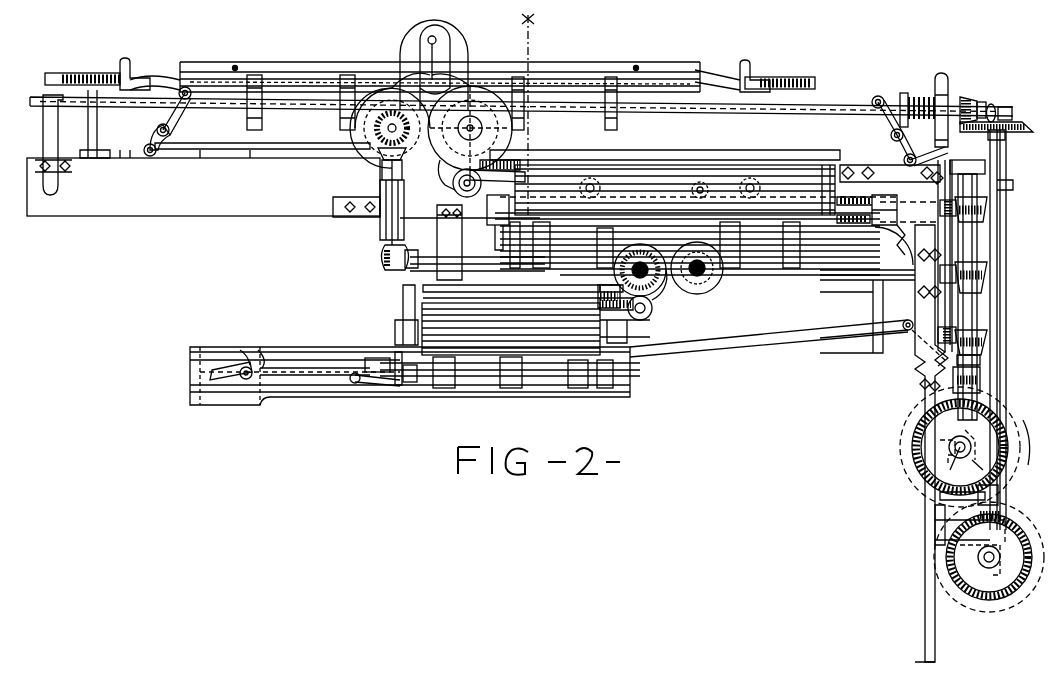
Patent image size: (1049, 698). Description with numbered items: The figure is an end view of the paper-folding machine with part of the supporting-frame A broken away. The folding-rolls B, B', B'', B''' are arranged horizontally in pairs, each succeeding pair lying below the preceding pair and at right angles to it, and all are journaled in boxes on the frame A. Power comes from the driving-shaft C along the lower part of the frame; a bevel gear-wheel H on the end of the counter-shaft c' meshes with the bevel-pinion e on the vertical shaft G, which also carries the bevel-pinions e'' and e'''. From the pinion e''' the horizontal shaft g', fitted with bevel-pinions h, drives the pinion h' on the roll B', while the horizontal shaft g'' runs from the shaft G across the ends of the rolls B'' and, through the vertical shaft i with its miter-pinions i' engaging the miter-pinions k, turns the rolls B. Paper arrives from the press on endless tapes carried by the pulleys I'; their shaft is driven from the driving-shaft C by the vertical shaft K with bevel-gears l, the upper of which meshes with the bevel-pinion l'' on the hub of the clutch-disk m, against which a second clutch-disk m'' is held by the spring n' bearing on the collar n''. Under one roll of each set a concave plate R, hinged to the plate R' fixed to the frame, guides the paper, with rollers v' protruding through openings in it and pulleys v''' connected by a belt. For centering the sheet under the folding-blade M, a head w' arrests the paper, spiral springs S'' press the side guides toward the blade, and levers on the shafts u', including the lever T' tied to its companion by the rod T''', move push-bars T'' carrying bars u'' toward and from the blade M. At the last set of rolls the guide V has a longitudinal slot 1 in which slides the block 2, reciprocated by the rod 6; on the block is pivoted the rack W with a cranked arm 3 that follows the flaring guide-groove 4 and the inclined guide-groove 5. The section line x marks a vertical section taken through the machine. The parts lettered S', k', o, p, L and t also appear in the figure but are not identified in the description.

The supporting-frame A is at (488, 410).
The folding-rolls B is at (470, 128).
The folding-roll B' is at (625, 151).
The folding-rolls B'' is at (668, 269).
The folding-roll B''' is at (522, 320).
The tape rolls or pulleys I' is at (438, 103).
The spring block S' is at (461, 65).
The spiral springs S'' is at (447, 69).
The vertical lever T' is at (552, 126).
The push-bars T'' is at (435, 67).
The connecting rod T''' is at (665, 151).
The horizontal shafts u' is at (540, 154).
The centering bars u'' is at (431, 73).
The head w' is at (440, 75).
The folding-blade M is at (434, 65).
The section line X X x is at (511, 149).
The miter-pinions k is at (395, 199).
The bevel gear k' is at (947, 324).
The vertical shaft i is at (378, 202).
The miter-pinions i' is at (374, 194).
The concave plate R is at (642, 295).
The hinge plate R' is at (481, 181).
The horizontal shaft g'' is at (720, 286).
The horizontal shaft g' is at (955, 209).
The rollers v' is at (510, 372).
The pulleys v''' is at (658, 162).
The guide V is at (410, 367).
The rack W is at (374, 350).
The longitudinal slot 1 is at (390, 360).
The sliding block 2 is at (340, 360).
The cranked short arm 3 is at (246, 346).
The flaring guide-groove 4 is at (267, 345).
The inclined guide-groove 5 is at (231, 371).
The rod 6 is at (676, 350).
The spring n' is at (899, 97).
The collar n'' is at (873, 82).
The clutch-disk m is at (942, 100).
The sliding clutch-disk m'' is at (921, 88).
The bevel-gears l is at (999, 329).
The bevel-pinion l'' is at (973, 96).
The disc o is at (992, 100).
The nut p is at (1005, 99).
The vertical shaft K is at (1015, 280).
The guide rail L is at (1007, 300).
The gear t is at (1008, 510).
The bevel-pinion h is at (988, 363).
The bevel-pinions h' is at (937, 256).
The bevel-pinion e is at (960, 435).
The bevel-pinion e'' is at (966, 282).
The bevel-pinion e''' is at (972, 290).
The vertical shaft G is at (972, 330).
The bevel gear-wheel H is at (965, 447).
The counter-shaft c' is at (963, 466).
The driving-shaft C is at (989, 548).